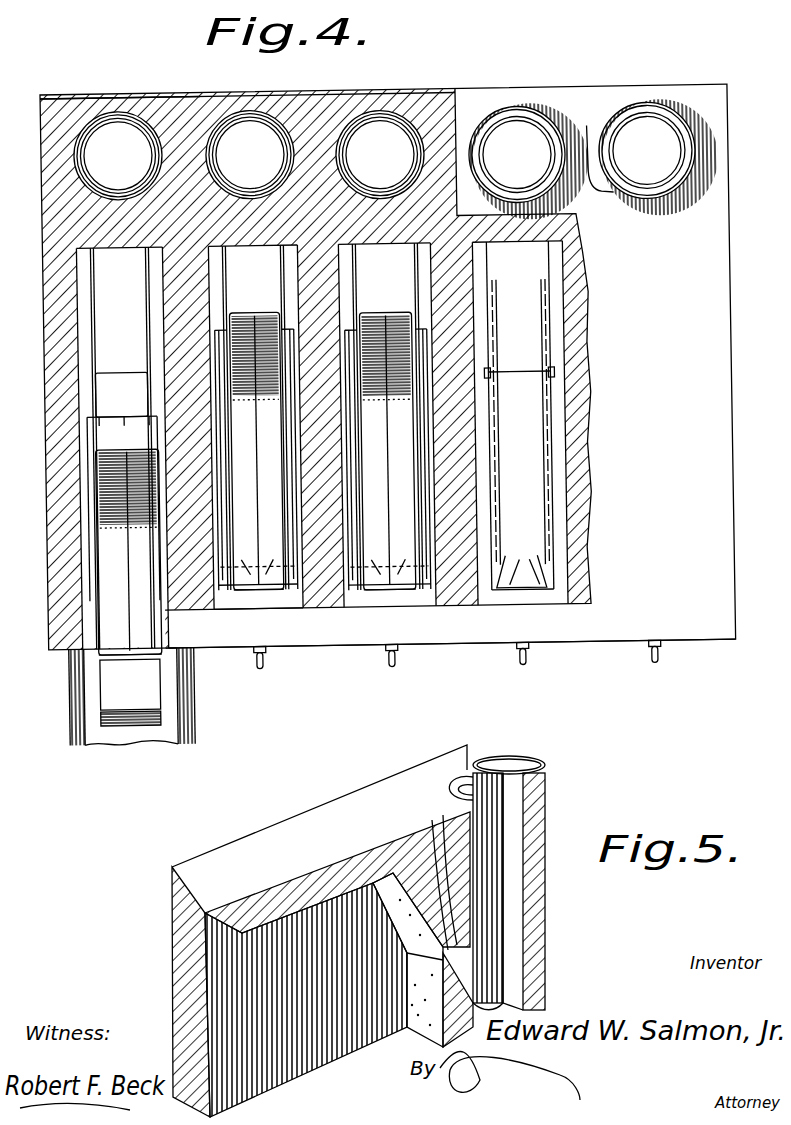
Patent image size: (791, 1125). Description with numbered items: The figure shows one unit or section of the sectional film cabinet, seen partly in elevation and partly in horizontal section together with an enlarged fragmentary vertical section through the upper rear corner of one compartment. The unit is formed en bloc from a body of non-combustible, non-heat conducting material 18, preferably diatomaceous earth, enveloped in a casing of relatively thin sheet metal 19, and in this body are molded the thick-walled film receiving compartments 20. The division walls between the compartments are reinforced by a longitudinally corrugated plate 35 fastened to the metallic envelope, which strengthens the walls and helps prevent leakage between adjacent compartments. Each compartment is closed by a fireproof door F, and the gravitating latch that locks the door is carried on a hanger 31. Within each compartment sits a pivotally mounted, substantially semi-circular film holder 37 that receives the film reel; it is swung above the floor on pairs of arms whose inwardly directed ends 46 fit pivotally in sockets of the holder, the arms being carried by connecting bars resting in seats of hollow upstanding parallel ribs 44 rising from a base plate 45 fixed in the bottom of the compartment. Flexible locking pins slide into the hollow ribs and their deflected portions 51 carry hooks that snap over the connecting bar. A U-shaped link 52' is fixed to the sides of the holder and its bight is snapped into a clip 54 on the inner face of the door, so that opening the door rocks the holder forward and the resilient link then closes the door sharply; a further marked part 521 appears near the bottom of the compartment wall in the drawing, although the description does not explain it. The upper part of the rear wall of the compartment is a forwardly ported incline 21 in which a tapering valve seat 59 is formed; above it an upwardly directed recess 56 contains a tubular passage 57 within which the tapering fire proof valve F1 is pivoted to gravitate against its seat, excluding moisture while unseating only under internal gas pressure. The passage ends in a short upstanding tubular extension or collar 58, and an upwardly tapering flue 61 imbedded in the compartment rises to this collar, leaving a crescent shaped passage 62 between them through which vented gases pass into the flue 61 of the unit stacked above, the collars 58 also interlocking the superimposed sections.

In FIG. 4, the body of non-combustible, non-heat conducting material 18 is at (437, 98).
In FIG. 5, the body of non-combustible, non-heat conducting material 18 is at (322, 888).
In FIG. 4, the casing of relatively thin sheet metal 19 is at (208, 107).
In FIG. 5, the casing of relatively thin sheet metal 19 is at (198, 878).
In FIG. 4, the film receiving compartment 20 is at (568, 306).
In FIG. 5, the film receiving compartment 20 is at (278, 935).
In FIG. 5, the forwardly ported incline 21 is at (385, 878).
In FIG. 4, the hanger 31 is at (268, 663).
In FIG. 4, the longitudinally corrugated member or plate 35 is at (193, 612).
In FIG. 4, the film holder 37 is at (262, 482).
In FIG. 4, the hollow upstanding parallel rib 44 is at (490, 258).
In FIG. 4, the base plate 45 is at (256, 446).
In FIG. 4, the inwardly directed outer ends of the arms 46 is at (510, 372).
In FIG. 4, the deflected portion of locking pin 51 is at (521, 570).
In FIG. 4, the U-shaped link 52' is at (90, 685).
In FIG. 4, the socket wall 521 is at (237, 600).
In FIG. 4, the clip 54 is at (100, 718).
In FIG. 5, the upwardly directed recess 56 is at (458, 862).
In FIG. 5, the tubular passage 57 is at (456, 878).
In FIG. 5, the upstanding tubular extension or collar 58 is at (530, 768).
In FIG. 5, the tapering port or valve seat 59 is at (456, 956).
In FIG. 4, the upwardly tapering flue 61 is at (233, 143).
In FIG. 4, the crescent shaped passage 62 is at (593, 152).
In FIG. 5, the crescent shaped passage 62 is at (468, 770).
In FIG. 4, the door F is at (175, 706).
In FIG. 5, the fire proof valve F1 is at (455, 902).